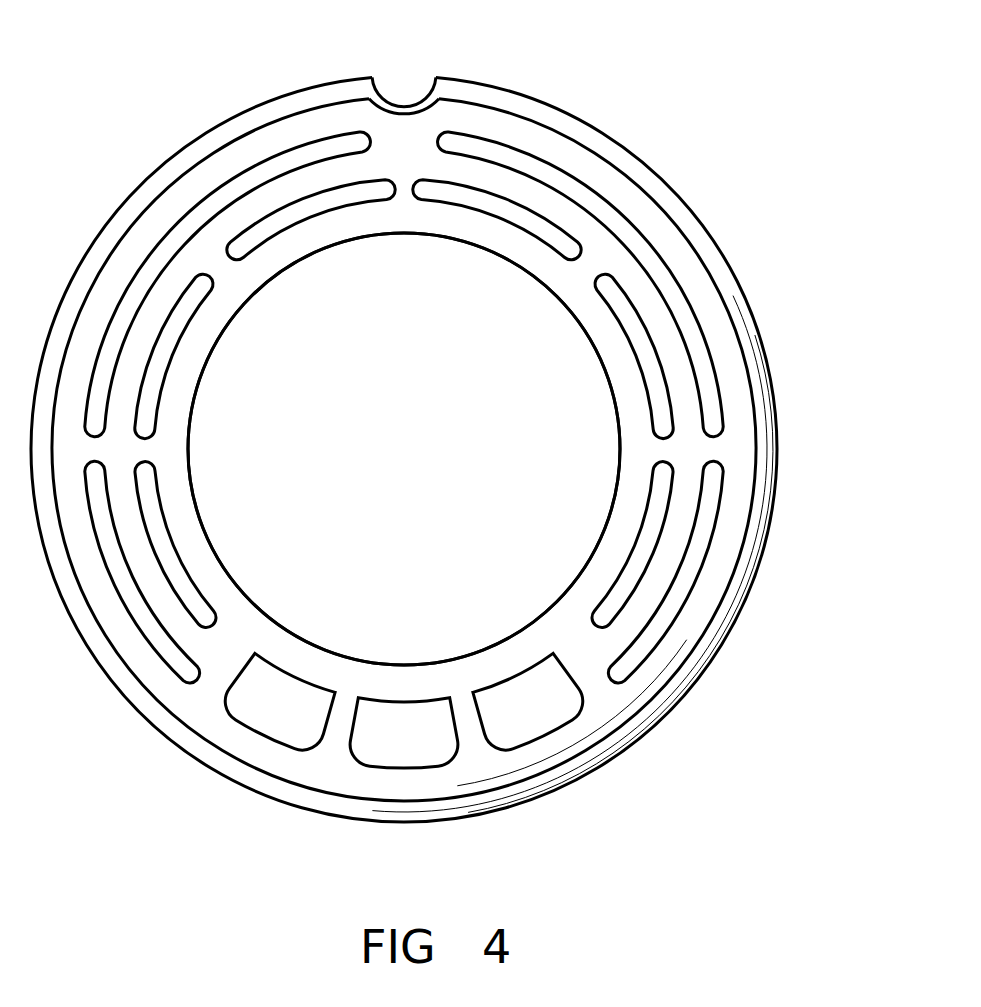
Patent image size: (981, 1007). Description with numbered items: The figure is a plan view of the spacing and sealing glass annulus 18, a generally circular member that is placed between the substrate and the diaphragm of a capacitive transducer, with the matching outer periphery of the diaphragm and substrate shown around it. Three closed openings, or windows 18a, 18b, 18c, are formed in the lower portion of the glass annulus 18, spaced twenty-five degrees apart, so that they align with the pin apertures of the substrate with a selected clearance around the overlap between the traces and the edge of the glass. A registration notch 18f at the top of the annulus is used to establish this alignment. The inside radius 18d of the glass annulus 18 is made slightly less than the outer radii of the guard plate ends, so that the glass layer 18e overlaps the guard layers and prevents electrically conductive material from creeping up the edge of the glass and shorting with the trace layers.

The spacing and sealing glass annulus 18 is at (155, 176).
The registration notch 18f is at (427, 95).
The inside radius of glass annulus 18d is at (500, 640).
The glass layer 18e is at (380, 683).
The closed opening (window) 18a is at (480, 713).
The closed opening (window) 18b is at (355, 720).
The closed opening (window) 18c is at (243, 673).